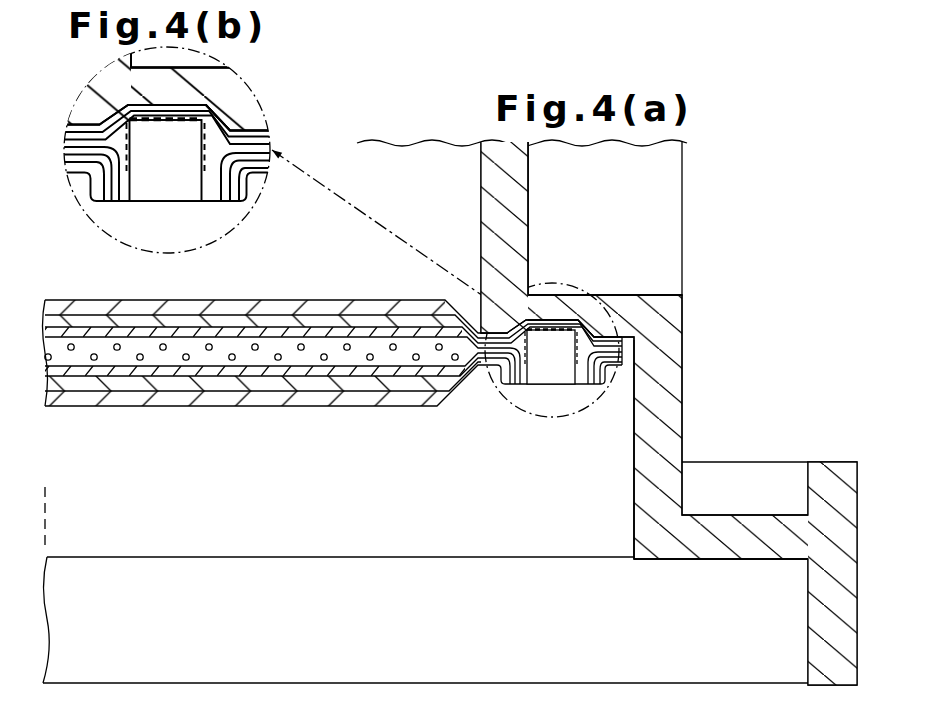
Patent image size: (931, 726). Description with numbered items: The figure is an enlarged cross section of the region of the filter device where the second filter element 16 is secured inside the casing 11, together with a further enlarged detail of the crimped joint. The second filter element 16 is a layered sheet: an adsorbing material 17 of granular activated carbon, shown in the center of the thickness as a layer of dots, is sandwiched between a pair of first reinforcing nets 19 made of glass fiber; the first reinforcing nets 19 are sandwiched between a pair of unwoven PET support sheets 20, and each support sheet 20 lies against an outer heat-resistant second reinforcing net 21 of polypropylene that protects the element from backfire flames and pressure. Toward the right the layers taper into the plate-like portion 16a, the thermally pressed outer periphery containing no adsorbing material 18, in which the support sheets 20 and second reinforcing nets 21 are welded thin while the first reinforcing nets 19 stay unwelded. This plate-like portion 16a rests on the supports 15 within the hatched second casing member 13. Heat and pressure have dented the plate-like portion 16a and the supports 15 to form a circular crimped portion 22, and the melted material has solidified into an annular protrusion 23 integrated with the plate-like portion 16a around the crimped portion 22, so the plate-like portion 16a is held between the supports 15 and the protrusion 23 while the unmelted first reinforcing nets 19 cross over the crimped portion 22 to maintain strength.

In FIG. 4A, the casing 11 is at (683, 330).
In FIG. 4A, the second casing member 13 is at (683, 394).
In FIG. 4A, the supports 15 is at (640, 295).
In FIG. 4A, the second filter element 16 is at (97, 305).
In FIG. 4A, the plate-like portion 16a is at (620, 380).
In FIG. 4B, the plate-like portion 16a is at (262, 182).
In FIG. 4A, the adsorbing material 17 is at (168, 342).
In FIG. 4A, the adsorbing material 18 is at (153, 363).
In FIG. 4A, the first reinforcing nets 19 is at (232, 332).
In FIG. 4A, the support sheets 20 is at (313, 322).
In FIG. 4A, the second reinforcing nets 21 is at (368, 302).
In FIG. 4A, the crimped portions 22 is at (548, 328).
In FIG. 4B, the crimped portions 22 is at (163, 120).
In FIG. 4A, the protrusions 23 is at (523, 380).
In FIG. 4B, the protrusions 23 is at (110, 192).